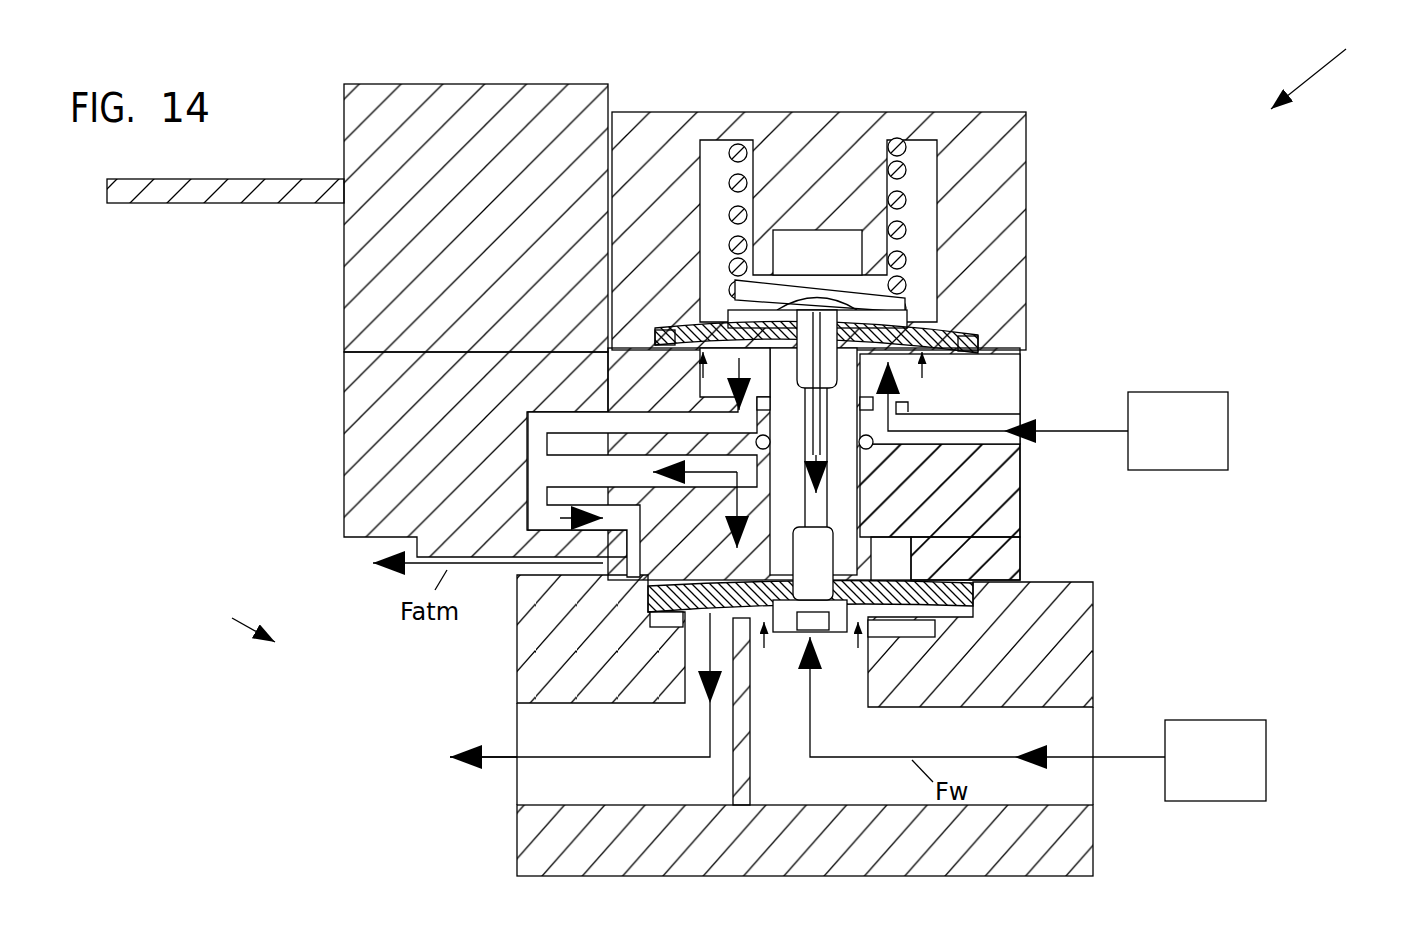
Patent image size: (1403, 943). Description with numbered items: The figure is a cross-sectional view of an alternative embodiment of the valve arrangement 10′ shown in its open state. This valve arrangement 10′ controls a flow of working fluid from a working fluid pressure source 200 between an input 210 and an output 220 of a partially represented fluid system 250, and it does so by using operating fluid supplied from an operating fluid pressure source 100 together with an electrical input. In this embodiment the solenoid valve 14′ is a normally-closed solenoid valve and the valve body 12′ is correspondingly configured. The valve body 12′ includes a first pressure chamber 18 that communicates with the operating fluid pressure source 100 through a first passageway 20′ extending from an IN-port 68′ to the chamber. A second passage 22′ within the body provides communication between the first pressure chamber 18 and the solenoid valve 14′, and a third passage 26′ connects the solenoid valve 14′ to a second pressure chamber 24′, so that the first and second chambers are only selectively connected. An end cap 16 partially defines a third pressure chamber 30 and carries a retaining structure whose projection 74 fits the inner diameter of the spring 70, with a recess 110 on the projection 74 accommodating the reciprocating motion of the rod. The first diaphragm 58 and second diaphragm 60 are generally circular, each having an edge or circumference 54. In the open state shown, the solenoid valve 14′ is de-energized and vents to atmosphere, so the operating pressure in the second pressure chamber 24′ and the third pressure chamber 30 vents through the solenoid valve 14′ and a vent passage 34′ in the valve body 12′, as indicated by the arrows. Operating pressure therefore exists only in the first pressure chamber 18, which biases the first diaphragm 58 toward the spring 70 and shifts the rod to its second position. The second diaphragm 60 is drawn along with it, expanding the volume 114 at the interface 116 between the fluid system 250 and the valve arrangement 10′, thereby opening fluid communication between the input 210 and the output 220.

The valve arrangement 10′ is at (1327, 64).
The valve body 12′ is at (1023, 512).
The solenoid valve 14′ is at (380, 84).
The end cap 16 is at (930, 112).
The first pressure chamber 18 is at (964, 404).
The first passageway 20′ is at (957, 434).
The second passage 22′ is at (678, 413).
The second pressure chamber 24′ is at (902, 565).
The third passage 26′ is at (690, 490).
The third pressure chamber 30 is at (921, 311).
The vent passage 34′ is at (600, 572).
The circumference 54 is at (667, 328).
The first diaphragm 58 is at (981, 343).
The second diaphragm 60 is at (977, 600).
The IN-port 68′ is at (1020, 433).
The spring 70 is at (747, 178).
The projection 74 is at (735, 292).
The operating fluid pressure source 100 is at (1185, 383).
The recess 110 is at (819, 232).
The volume 114 is at (690, 637).
The interface 116 is at (774, 625).
The working fluid pressure source 200 is at (1218, 720).
The input 210 is at (1092, 797).
The output 220 is at (515, 793).
The fluid system 250 is at (225, 616).